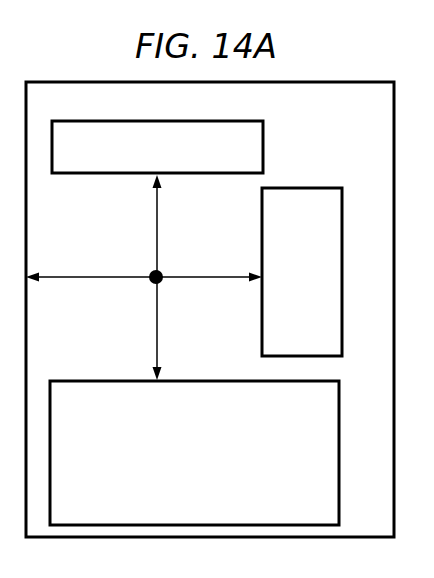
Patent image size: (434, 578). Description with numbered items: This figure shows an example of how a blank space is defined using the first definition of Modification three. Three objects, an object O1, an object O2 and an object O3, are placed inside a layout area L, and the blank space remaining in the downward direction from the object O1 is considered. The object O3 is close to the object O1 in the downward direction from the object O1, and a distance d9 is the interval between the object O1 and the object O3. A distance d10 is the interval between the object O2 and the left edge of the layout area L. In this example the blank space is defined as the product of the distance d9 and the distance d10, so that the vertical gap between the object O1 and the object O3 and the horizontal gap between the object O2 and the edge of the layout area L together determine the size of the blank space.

The layout area L is at (394, 170).
The object O1 is at (263, 140).
The object O2 is at (312, 187).
The object O3 is at (339, 430).
The distance d9 is at (158, 183).
The distance d10 is at (26, 277).